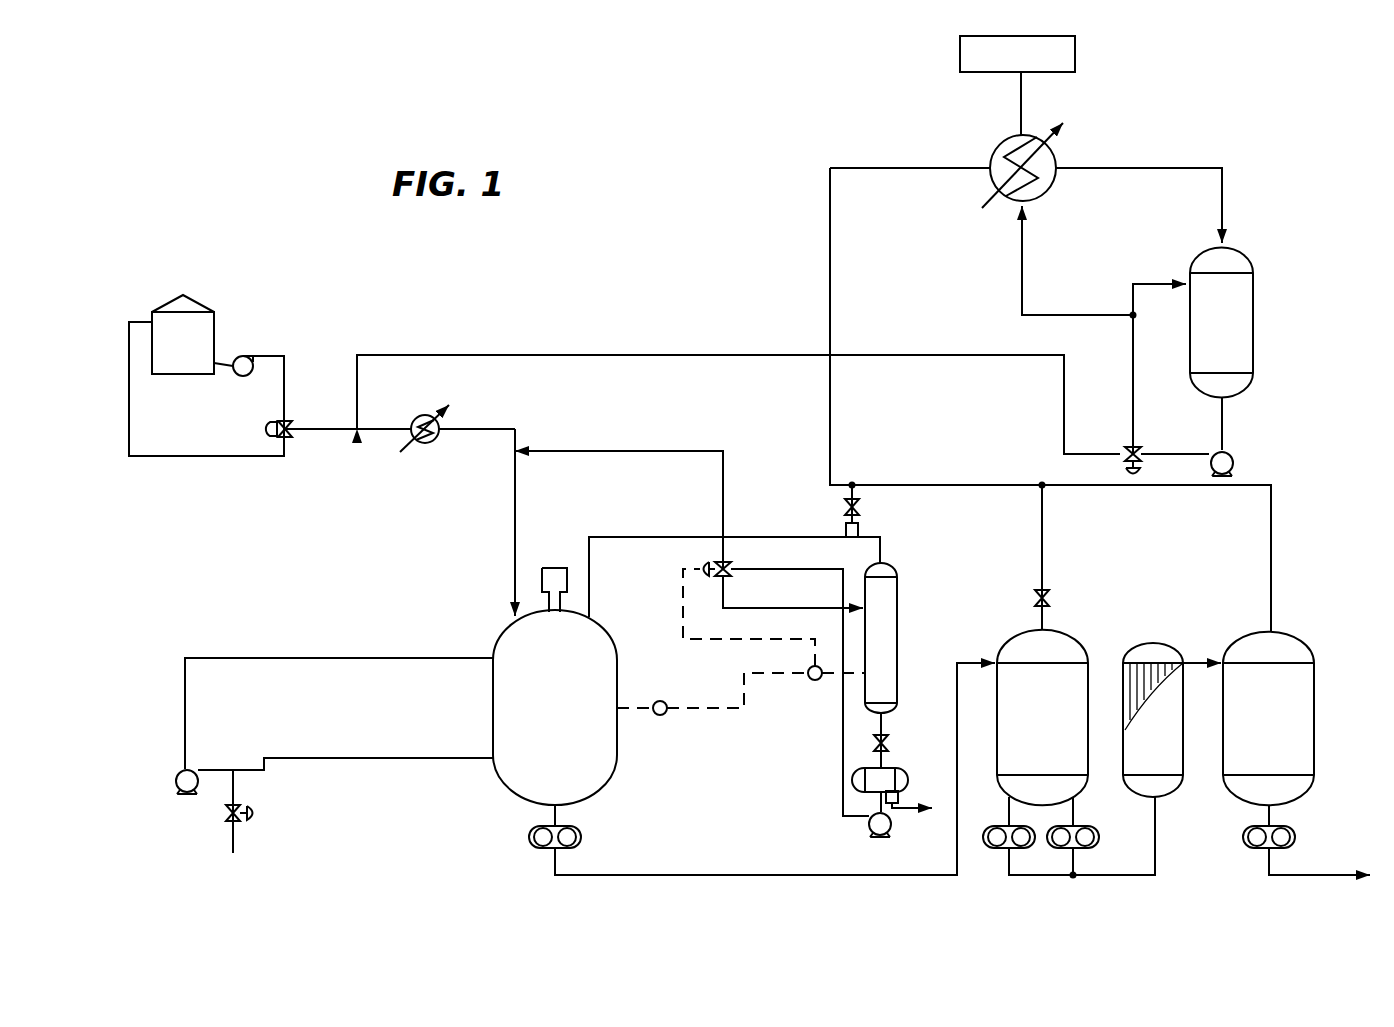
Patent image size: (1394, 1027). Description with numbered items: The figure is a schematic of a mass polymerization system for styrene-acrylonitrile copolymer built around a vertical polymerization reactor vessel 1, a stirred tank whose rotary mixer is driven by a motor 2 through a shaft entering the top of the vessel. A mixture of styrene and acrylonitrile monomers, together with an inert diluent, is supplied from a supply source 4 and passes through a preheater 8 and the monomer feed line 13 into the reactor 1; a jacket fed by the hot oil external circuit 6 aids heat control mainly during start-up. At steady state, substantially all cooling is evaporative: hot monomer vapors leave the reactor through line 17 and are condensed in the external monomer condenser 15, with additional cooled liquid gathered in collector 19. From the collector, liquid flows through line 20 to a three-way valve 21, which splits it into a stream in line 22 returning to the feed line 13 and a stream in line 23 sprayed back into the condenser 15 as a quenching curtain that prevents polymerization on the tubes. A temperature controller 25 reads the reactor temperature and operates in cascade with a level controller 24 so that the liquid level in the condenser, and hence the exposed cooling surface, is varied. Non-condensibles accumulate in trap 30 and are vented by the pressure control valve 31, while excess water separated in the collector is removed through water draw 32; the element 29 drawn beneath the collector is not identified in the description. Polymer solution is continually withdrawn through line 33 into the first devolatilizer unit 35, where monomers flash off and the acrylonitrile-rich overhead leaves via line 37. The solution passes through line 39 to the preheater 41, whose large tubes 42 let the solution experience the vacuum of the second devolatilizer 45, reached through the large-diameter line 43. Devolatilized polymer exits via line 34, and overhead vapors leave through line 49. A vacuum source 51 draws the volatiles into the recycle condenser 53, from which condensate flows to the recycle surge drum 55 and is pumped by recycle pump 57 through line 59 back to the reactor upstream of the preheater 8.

The polymerization reactor vessel 1 is at (546, 771).
The motor 2 is at (554, 575).
The supply source 4 is at (175, 353).
The external circuit 6 is at (185, 712).
The preheater 8 is at (422, 414).
The monomer feed line 13 is at (517, 432).
The external monomer condenser 15 is at (890, 657).
The line 17 is at (648, 537).
The collector 19 is at (888, 768).
The line 20 is at (843, 748).
The three-way valve 21 is at (719, 574).
The line 22 is at (724, 500).
The line 23 is at (790, 608).
The level controller 24 is at (819, 680).
The temperature controller 25 is at (668, 703).
The pump 29 is at (868, 826).
The trap 30 is at (860, 530).
The pressure control valve 31 is at (860, 512).
The water draw 32 is at (900, 797).
The line 33 is at (720, 874).
The line 34 is at (1340, 875).
The first devolatilizer unit 35 is at (1024, 746).
The line 37 is at (1043, 562).
The line 39 is at (1140, 875).
The preheater 41 is at (1138, 746).
The tubes 42 is at (1126, 668).
The line 43 is at (1197, 663).
The second devolatilizer 45 is at (1250, 739).
The line 49 is at (1272, 590).
The vacuum source 51 is at (1076, 56).
The recycle condenser 53 is at (1050, 190).
The recycle surge drum 55 is at (1208, 331).
The recycle pump 57 is at (1236, 458).
The line 59 is at (667, 354).